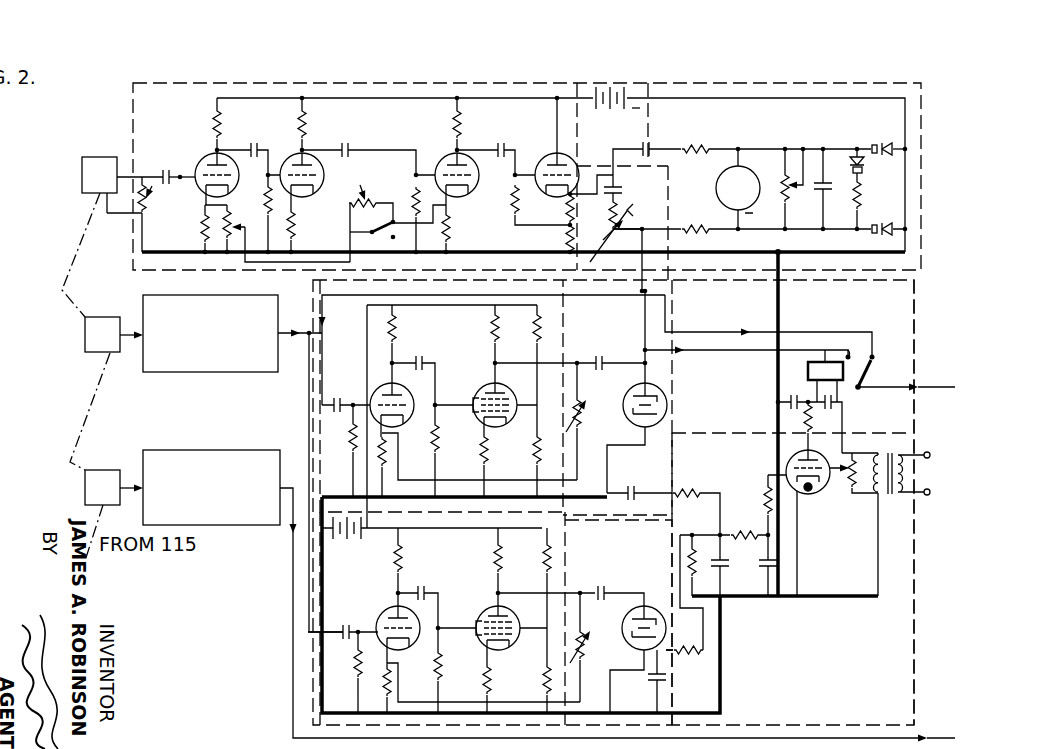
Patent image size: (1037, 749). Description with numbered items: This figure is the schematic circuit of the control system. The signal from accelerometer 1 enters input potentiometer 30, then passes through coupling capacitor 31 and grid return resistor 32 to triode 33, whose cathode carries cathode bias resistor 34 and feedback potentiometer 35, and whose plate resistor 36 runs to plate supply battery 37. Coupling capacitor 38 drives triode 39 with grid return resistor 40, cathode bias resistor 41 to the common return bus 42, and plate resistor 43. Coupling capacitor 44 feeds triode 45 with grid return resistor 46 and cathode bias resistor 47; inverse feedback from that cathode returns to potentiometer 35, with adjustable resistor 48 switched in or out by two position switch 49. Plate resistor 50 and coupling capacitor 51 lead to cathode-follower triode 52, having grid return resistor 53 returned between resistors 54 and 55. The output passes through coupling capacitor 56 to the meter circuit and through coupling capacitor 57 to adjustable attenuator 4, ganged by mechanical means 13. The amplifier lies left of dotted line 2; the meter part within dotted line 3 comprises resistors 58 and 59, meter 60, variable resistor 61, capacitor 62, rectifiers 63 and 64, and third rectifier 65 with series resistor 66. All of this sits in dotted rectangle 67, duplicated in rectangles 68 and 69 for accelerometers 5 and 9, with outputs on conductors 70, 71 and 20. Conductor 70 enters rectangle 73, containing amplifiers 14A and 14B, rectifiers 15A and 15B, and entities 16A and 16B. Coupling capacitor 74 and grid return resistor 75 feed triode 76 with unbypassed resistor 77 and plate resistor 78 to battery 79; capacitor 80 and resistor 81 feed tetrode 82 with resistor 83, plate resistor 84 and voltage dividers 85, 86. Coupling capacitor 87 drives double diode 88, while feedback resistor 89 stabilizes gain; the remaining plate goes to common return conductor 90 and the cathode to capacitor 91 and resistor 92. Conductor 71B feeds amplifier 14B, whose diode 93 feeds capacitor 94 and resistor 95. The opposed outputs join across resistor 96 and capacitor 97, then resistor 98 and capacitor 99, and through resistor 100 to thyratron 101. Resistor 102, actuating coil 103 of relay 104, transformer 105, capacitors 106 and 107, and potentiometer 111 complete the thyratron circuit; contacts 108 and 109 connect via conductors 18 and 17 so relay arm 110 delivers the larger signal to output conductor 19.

The accelerometer 1 is at (101, 157).
The dotted line 2 is at (596, 150).
The dotted line 3 is at (650, 110).
The adjustable attenuator 4 is at (593, 232).
The accelerometer 5 is at (102, 316).
The accelerometer 9 is at (102, 469).
The mechanical ganging means 13 is at (624, 230).
The triode-tetrode amplifier 14A is at (457, 363).
The triode-tetrode amplifier 14B is at (437, 574).
The double diode rectifier 15A is at (601, 337).
The voltage doubler double diode rectifier 15B is at (584, 557).
The thyratron-relay entity 16A is at (735, 464).
The relay entity 16B is at (824, 308).
The conductor 17 is at (693, 331).
The conductor 18 is at (739, 350).
The output conductor 19 is at (927, 387).
The conductor 20 is at (293, 650).
The input potentiometer 30 is at (147, 204).
The coupling capacitor 31 is at (176, 165).
The grid return resistor 32 is at (140, 218).
The triode 33 is at (213, 172).
The cathode bias resistor 34 is at (203, 229).
The feedback potentiometer 35 is at (238, 228).
The plate resistor 36 is at (203, 124).
The plate supply battery 37 is at (608, 109).
The coupling capacitor 38 is at (248, 148).
The triode 39 is at (299, 174).
The grid return resistor 40 is at (257, 214).
The cathode bias resistor 41 is at (301, 232).
The common return bus 42 is at (316, 259).
The plate resistor 43 is at (313, 123).
The coupling capacitor 44 is at (368, 153).
The triode 45 is at (453, 170).
The grid return resistor 46 is at (404, 207).
The cathode bias resistor 47 is at (445, 229).
The adjustable resistor 48 is at (365, 220).
The two position switch 49 is at (372, 223).
The plate resistor 50 is at (470, 123).
The coupling capacitor 51 is at (496, 149).
The triode 52 is at (569, 146).
The grid return resistor 53 is at (528, 199).
The resistor 54 is at (557, 210).
The resistor 55 is at (557, 239).
The coupling capacitor 56 is at (634, 149).
The coupling capacitor 57 is at (623, 185).
The resistor 58 is at (760, 137).
The resistor 59 is at (760, 219).
The meter 60 is at (720, 179).
The variable resistor 61 is at (781, 189).
The capacitor 62 is at (820, 190).
The rectifier 63 is at (889, 138).
The rectifier 64 is at (875, 219).
The third rectifier 65 is at (870, 164).
The series resistor 66 is at (871, 199).
The dotted rectangle 67 is at (921, 112).
The amplifier-meter-attenuator 68 is at (236, 296).
The amplifier-meter-attenuator 69 is at (228, 453).
The conductor 70 is at (646, 240).
The conductor 71 is at (471, 350).
The conductor branch 71B is at (306, 589).
The dotted rectangle 73 is at (914, 312).
The coupling capacitor 74 is at (346, 391).
The grid return resistor 75 is at (341, 451).
The triode 76 is at (390, 399).
The unbypassed resistor 77 is at (477, 465).
The resistor 78 is at (404, 334).
The battery 79 is at (348, 538).
The capacitor 80 is at (432, 369).
The resistor 81 is at (448, 450).
The tetrode 82 is at (499, 398).
The resistor 83 is at (496, 464).
The resistor 84 is at (481, 334).
The voltage divider 85 is at (525, 355).
The voltage divider 86 is at (526, 451).
The coupling capacitor 87 is at (570, 352).
The double diode 88 is at (672, 384).
The resistor 89 is at (586, 421).
The common return conductor 90 is at (569, 506).
The capacitor 91 is at (639, 480).
The resistor 92 is at (696, 499).
The diode 93 is at (623, 625).
The capacitor 94 is at (647, 681).
The resistor 95 is at (685, 605).
The shunt-connected resistor 96 is at (673, 557).
The capacitor 97 is at (729, 565).
The series-connected resistor 98 is at (725, 525).
The shunt capacitor 99 is at (757, 565).
The thyratron grid current limiting resistor 100 is at (758, 501).
The thyratron 101 is at (808, 514).
The resistor 102 is at (803, 419).
The actuating coil 103 is at (825, 379).
The relay 104 is at (800, 357).
The transformer 105 is at (908, 524).
The capacitor 106 is at (783, 395).
The capacitor 107 is at (843, 415).
The contact 108 is at (849, 335).
The contact 109 is at (877, 352).
The relay arm 110 is at (868, 374).
The potentiometer 111 is at (854, 486).